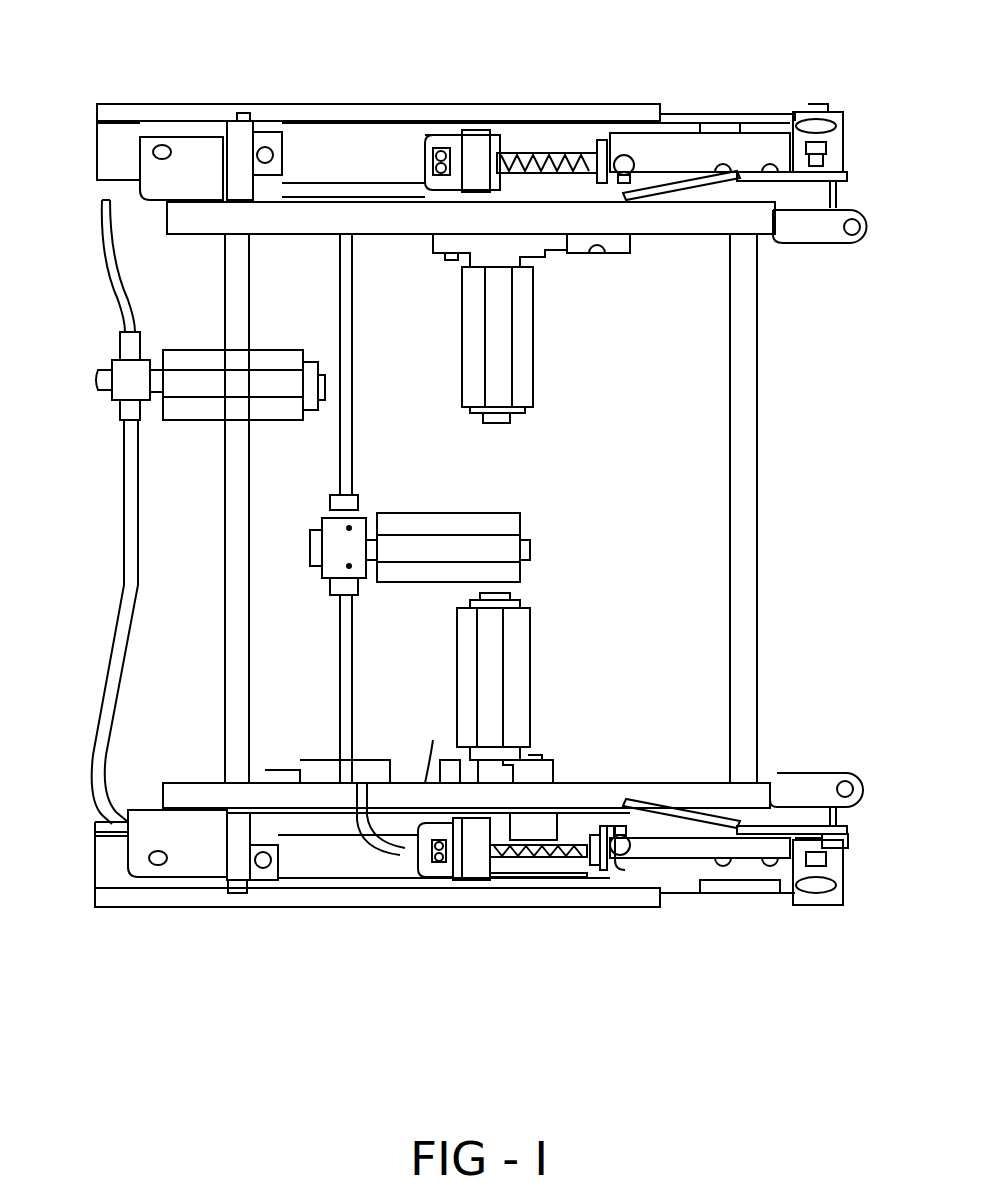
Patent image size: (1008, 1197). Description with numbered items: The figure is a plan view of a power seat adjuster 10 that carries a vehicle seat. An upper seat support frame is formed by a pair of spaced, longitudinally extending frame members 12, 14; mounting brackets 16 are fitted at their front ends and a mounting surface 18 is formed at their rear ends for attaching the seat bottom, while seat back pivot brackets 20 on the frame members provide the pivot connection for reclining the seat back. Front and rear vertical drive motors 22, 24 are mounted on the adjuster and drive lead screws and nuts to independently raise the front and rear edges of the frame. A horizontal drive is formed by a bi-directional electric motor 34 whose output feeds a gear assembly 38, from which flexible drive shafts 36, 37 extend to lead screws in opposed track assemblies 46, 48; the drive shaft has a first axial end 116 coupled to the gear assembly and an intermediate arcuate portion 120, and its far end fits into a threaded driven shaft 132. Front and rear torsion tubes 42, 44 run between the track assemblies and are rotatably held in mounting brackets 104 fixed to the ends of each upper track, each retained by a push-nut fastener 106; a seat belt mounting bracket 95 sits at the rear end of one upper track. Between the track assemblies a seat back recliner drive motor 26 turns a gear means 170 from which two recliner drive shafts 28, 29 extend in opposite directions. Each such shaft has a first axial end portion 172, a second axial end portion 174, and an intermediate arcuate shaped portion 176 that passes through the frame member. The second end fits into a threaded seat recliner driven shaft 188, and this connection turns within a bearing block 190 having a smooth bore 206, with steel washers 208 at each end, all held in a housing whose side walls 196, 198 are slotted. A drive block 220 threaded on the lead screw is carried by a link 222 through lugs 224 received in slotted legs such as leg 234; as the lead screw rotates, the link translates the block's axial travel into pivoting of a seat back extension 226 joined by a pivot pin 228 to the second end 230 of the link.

The power seat adjuster 10 is at (486, 30).
The seat support frame member 12 is at (552, 103).
The seat support frame member 14 is at (590, 762).
The mounting bracket 16 is at (138, 106).
The mounting surface 18 is at (812, 244).
The seat back pivot bracket 20 is at (770, 112).
The front vertical drive motor 22 is at (522, 372).
The rear vertical drive motor 24 is at (518, 656).
The seat back recliner drive motor 26 is at (500, 525).
The seat recliner drive shaft 28 is at (348, 665).
The seat recliner drive shaft 29 is at (352, 462).
The bi-directional electric motor 34 is at (272, 418).
The flexible drive shaft 36 is at (133, 580).
The flexible drive shaft 37 is at (130, 278).
The gear assembly 38 is at (135, 398).
The front torsion tube 42 is at (245, 622).
The rear torsion tube 44 is at (760, 585).
The track assembly 46 is at (350, 68).
The track assembly 48 is at (285, 907).
The seat belt mounting bracket 95 is at (804, 110).
The mounting bracket 104 is at (262, 108).
The fastener 106 is at (230, 107).
The first axial end 116 is at (132, 445).
The intermediate arcuate portion 120 is at (100, 800).
The driven shaft 132 is at (525, 880).
The gear means 170 is at (318, 548).
The first axial end portion 172 is at (336, 615).
The second axial end portion 174 is at (370, 880).
The intermediate arcuate shaped portion 176 is at (318, 888).
The seat recliner driven shaft 188 is at (565, 870).
The bearing block 190 is at (468, 875).
The side wall 196 is at (446, 820).
The side wall 198 is at (490, 880).
The smooth bore 206 is at (442, 878).
The steel washer 208 is at (420, 912).
The drive block 220 is at (608, 108).
The link 222 is at (672, 110).
The lug 224 is at (622, 834).
The seat back extension 226 is at (832, 808).
The pivot pin 228 is at (840, 846).
The second end 230 is at (795, 900).
The leg 234 is at (606, 875).